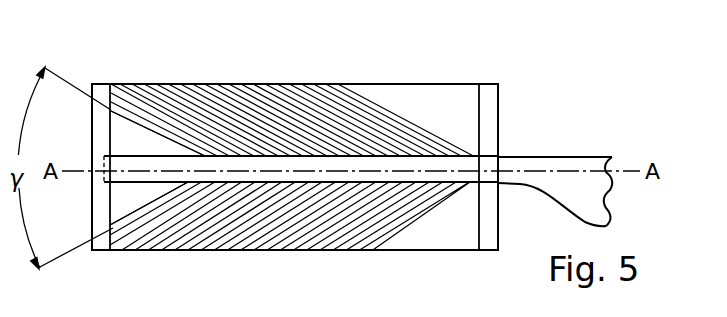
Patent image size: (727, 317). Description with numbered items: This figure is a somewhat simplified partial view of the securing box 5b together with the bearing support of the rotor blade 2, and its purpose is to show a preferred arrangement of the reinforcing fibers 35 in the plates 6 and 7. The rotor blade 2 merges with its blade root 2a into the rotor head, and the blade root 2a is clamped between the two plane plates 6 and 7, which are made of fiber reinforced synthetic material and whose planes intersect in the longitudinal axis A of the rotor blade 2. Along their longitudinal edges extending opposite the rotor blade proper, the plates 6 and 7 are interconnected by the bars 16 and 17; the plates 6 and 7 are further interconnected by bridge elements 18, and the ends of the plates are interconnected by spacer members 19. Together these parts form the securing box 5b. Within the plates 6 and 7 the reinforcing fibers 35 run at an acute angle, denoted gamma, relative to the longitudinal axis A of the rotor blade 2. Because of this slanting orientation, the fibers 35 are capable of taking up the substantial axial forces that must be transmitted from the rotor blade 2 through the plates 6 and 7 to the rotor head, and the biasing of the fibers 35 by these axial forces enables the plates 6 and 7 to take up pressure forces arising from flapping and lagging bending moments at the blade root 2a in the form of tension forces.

The securing box 5b is at (440, 84).
The bridge element 18 is at (100, 115).
The spacer member 19 is at (486, 128).
The bar 17 is at (212, 83).
The bar 16 is at (246, 251).
The plate 6 is at (282, 122).
The plate 7 is at (300, 208).
The reinforcing fibers 35 is at (172, 118).
The blade root 2a is at (284, 157).
The rotor blade 2 is at (572, 169).